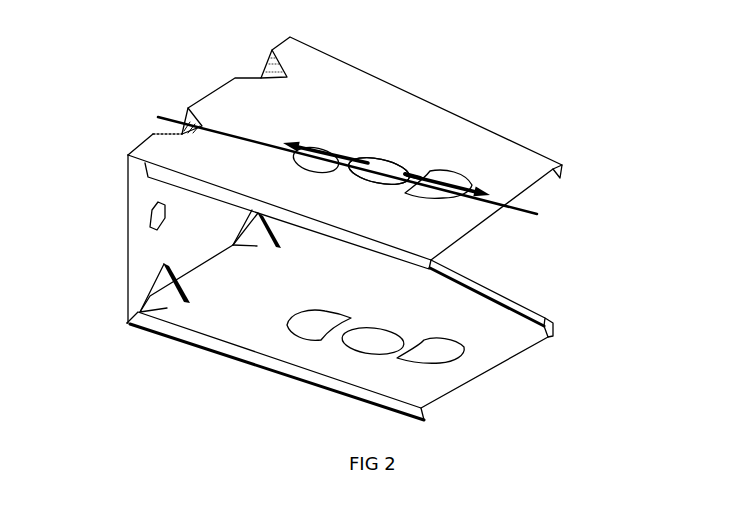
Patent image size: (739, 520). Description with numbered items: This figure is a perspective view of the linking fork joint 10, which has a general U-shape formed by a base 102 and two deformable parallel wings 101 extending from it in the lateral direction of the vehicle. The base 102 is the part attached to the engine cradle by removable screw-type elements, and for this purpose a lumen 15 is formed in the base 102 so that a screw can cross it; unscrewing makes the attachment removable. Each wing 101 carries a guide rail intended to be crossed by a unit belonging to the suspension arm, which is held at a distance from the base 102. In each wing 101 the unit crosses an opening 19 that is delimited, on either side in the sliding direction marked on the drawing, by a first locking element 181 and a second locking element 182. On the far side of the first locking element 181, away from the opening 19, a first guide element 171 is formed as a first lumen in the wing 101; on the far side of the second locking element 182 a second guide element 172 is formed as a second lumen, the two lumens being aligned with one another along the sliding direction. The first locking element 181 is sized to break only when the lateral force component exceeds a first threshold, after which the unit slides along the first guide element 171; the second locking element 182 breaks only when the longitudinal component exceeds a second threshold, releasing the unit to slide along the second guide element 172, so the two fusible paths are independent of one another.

The linking fork joint 10 is at (138, 387).
The lumen 15 is at (157, 211).
The opening 19 is at (392, 170).
The wing 101 is at (433, 128).
The base 102 is at (145, 262).
The first guide element 171 is at (327, 153).
The second guide element 172 is at (453, 183).
The first locking element 181 is at (350, 162).
The second locking element 182 is at (420, 176).